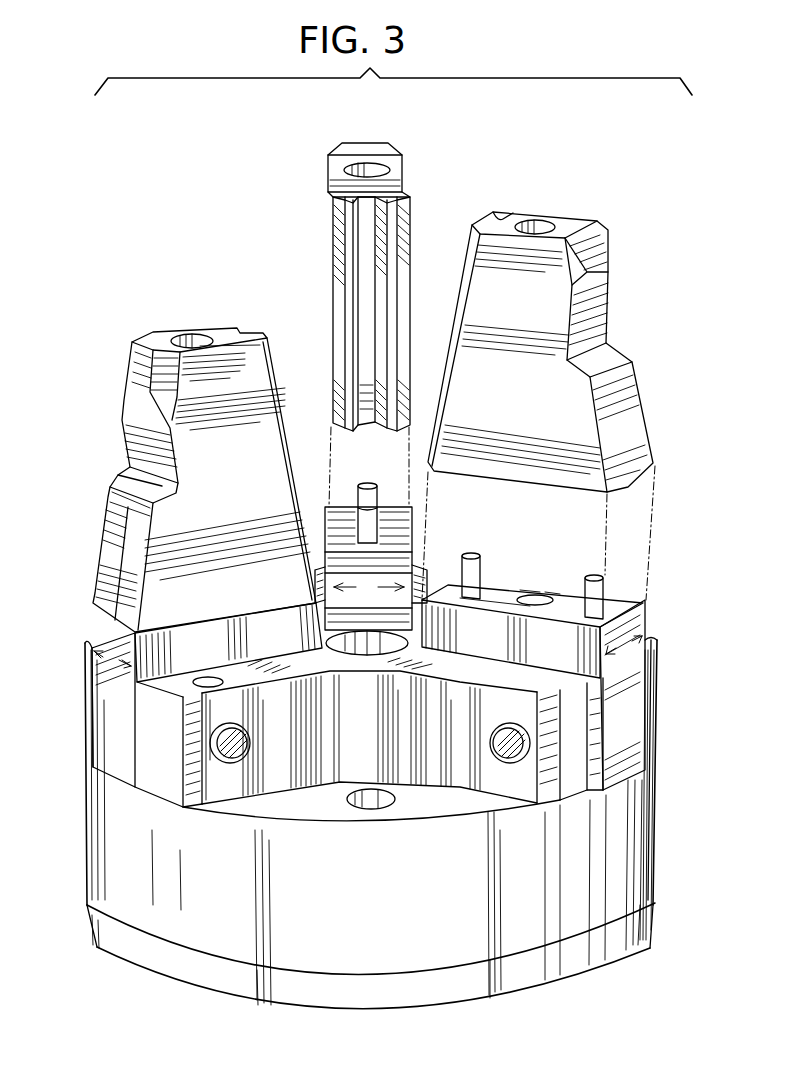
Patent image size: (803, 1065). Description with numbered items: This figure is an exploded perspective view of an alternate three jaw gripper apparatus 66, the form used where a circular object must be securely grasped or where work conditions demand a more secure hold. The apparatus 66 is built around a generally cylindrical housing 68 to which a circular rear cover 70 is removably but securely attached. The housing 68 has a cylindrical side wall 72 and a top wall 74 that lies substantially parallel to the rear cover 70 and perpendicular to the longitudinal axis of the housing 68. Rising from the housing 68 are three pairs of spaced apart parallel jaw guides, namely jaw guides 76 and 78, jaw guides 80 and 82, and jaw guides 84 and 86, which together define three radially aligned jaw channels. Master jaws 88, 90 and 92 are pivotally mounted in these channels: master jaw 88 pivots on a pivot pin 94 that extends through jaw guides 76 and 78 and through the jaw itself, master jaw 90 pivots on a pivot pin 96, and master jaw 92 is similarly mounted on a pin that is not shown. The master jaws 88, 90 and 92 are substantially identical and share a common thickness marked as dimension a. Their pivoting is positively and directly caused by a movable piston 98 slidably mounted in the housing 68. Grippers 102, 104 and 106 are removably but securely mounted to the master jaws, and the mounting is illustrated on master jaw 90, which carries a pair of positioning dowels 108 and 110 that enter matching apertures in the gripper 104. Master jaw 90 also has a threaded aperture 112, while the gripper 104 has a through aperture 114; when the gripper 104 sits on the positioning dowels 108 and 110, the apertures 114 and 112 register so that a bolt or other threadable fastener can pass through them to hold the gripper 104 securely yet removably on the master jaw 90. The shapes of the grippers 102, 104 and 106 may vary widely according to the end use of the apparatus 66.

The three jaw gripper apparatus 66 is at (223, 1017).
The housing 68 is at (74, 856).
The rear cover 70 is at (88, 928).
The side wall 72 is at (540, 920).
The top wall 74 is at (333, 812).
The jaw guide 76 is at (92, 645).
The jaw guide 78 is at (142, 725).
The jaw guide 80 is at (592, 733).
The jaw guide 82 is at (657, 640).
The jaw guide 84 is at (428, 595).
The jaw guide 86 is at (317, 600).
The master jaw 88 is at (102, 690).
The master jaw 90 is at (638, 670).
The master jaw 92 is at (343, 507).
The pivot pin 94 is at (220, 750).
The pivot pin 96 is at (522, 756).
The piston 98 is at (333, 636).
The gripper 102 is at (152, 336).
The gripper 104 is at (580, 216).
The gripper 106 is at (400, 148).
The positioning dowel 108 is at (590, 576).
The positioning dowel 110 is at (470, 556).
The threaded aperture 112 is at (536, 597).
The through aperture 114 is at (537, 212).